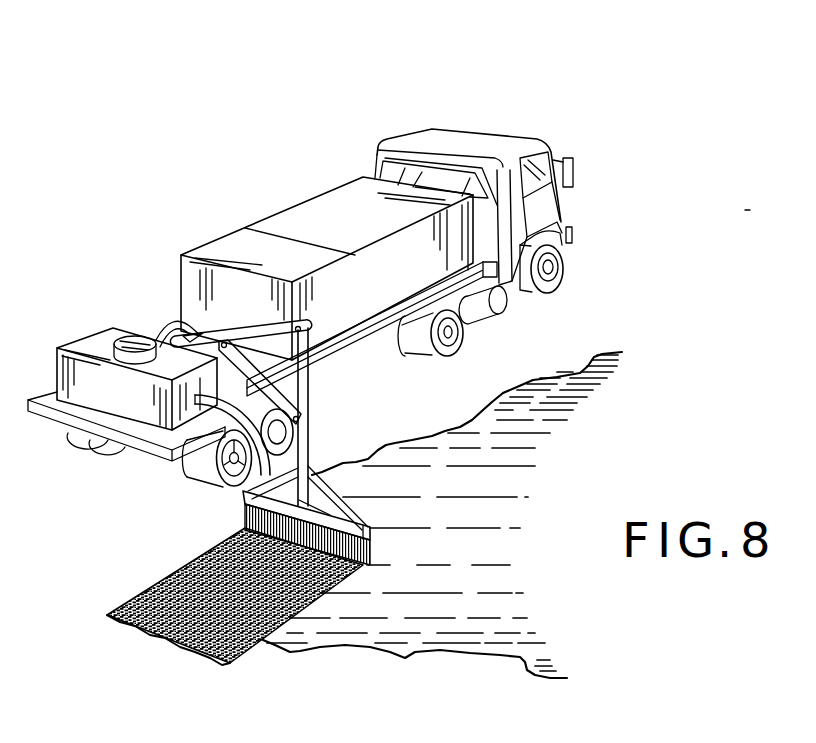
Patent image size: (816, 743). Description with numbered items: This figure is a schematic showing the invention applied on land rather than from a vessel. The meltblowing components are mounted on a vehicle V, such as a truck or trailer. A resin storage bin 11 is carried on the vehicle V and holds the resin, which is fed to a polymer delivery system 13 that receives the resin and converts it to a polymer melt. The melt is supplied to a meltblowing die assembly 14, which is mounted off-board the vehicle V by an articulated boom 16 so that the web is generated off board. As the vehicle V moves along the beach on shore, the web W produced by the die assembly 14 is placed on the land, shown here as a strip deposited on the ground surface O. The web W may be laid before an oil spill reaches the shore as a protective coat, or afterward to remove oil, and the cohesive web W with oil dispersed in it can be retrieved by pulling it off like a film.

The vehicle V is at (473, 126).
The resin storage bin 11 is at (298, 217).
The polymer delivery system 13 is at (103, 322).
The ground surface O is at (553, 408).
The meltblowing die assembly 14 is at (244, 494).
The articulated boom 16 is at (308, 399).
The web W is at (146, 581).